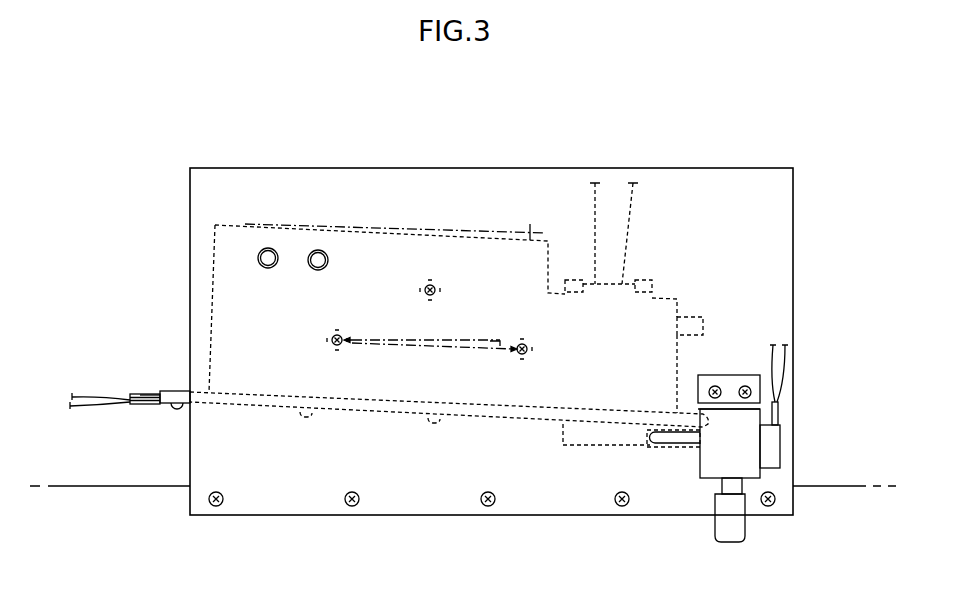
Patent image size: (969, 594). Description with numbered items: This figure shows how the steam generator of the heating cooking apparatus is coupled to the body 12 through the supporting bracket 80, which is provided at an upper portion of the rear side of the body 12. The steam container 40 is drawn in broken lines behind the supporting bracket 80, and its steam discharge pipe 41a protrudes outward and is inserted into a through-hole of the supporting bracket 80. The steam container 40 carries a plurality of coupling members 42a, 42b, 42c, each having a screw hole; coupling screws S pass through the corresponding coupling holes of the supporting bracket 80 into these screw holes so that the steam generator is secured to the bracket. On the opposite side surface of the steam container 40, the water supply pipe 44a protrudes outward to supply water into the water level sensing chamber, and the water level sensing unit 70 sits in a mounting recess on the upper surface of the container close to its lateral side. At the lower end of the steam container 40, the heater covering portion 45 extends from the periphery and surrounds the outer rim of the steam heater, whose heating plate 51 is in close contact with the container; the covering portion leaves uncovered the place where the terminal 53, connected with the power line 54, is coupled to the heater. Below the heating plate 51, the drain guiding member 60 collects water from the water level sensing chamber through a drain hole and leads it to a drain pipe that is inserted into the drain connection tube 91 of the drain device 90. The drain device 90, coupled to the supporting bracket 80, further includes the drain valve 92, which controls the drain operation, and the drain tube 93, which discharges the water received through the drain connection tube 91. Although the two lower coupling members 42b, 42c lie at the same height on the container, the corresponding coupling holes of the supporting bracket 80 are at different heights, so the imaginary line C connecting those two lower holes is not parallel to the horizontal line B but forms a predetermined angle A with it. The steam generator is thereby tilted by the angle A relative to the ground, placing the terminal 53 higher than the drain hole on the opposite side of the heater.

The body 12 is at (838, 486).
The steam container 40 is at (236, 225).
The steam discharge pipe 41a is at (268, 248).
The coupling member 42a is at (433, 284).
The coupling member 42b is at (340, 334).
The coupling member 42c is at (522, 343).
The water supply pipe 44a is at (688, 318).
The heater covering portion 45 is at (175, 391).
The heating plate 51 is at (132, 393).
The terminal 53 is at (150, 405).
The power line 54 is at (90, 393).
The drain guiding member 60 is at (577, 447).
The water level sensing unit 70 is at (631, 280).
The supporting bracket 80 is at (783, 300).
The drain device 90 is at (770, 483).
The drain connection tube 91 is at (665, 444).
The drain valve 92 is at (775, 440).
The drain tube 93 is at (722, 486).
The predetermined angle A is at (534, 233).
The horizontal line B is at (405, 338).
The imaginary line C is at (450, 350).
The coupling screws S is at (427, 285).